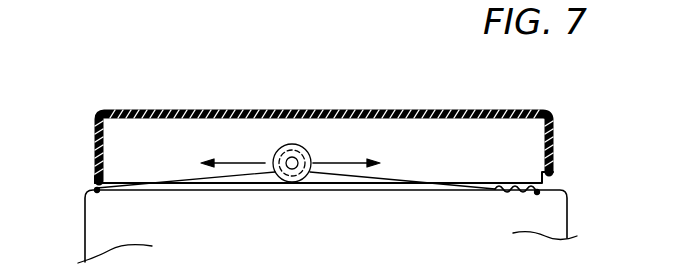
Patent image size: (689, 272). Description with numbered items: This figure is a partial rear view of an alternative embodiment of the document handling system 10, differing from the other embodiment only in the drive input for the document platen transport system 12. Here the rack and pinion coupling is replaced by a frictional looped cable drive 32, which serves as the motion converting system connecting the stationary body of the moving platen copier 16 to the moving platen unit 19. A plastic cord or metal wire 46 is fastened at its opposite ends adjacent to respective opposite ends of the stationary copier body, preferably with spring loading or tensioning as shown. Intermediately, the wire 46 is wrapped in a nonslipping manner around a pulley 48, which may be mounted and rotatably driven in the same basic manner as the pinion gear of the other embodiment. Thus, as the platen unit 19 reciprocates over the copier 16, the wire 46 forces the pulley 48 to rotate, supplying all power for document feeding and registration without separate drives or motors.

The document handling system 10 is at (203, 84).
The moving platen unit 19 is at (117, 111).
The frictional looped cable drive 32 is at (322, 124).
The document platen transport system 12 is at (276, 152).
The pulley 48 is at (313, 153).
The wire 46 is at (323, 184).
The moving platen copier 16 is at (95, 230).